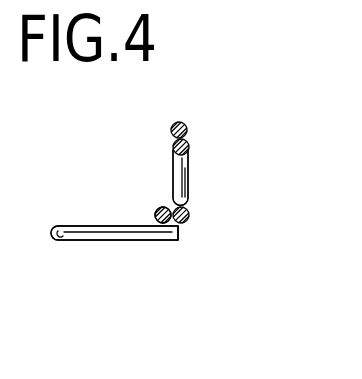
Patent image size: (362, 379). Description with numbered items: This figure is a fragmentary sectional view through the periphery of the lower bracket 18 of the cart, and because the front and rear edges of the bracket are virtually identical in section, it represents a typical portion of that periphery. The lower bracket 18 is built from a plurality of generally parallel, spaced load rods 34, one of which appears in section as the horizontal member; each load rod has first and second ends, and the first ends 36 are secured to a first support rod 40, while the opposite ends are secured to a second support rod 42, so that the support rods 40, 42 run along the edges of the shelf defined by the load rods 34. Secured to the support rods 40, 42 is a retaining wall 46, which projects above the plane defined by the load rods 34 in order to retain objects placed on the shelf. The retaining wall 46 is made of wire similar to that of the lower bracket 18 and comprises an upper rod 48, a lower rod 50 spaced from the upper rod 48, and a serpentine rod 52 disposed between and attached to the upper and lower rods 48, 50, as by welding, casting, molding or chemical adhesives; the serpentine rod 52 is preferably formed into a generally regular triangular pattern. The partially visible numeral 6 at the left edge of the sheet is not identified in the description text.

The lower bracket 18 is at (101, 115).
The upper rod 48 is at (177, 121).
The retaining wall 46 is at (165, 158).
The serpentine rod 52 is at (172, 180).
The first support rod 40 is at (157, 211).
The second support rod 42 is at (163, 215).
The lower rod 50 is at (187, 220).
The load rods 34 is at (81, 232).
The first ends 36 is at (180, 240).
The frame member 6 is at (6, 150).